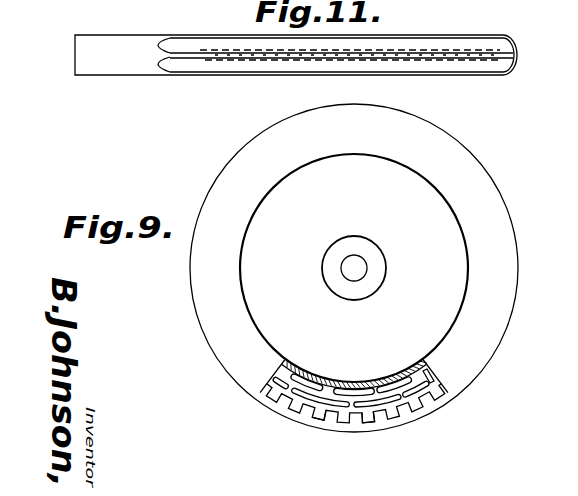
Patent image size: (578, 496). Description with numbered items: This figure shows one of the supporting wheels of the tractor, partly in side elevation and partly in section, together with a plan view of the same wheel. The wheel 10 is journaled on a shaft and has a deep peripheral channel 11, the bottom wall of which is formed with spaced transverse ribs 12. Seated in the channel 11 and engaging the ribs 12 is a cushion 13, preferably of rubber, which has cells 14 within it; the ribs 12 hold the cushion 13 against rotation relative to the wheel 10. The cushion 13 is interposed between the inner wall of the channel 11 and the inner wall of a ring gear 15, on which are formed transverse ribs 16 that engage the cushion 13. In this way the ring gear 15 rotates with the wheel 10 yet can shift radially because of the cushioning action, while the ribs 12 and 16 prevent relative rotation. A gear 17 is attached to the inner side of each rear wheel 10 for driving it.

The wheel 10 is at (422, 202).
The peripheral channel 11 is at (445, 377).
The transverse ribs 12 is at (336, 380).
The cushion 13 is at (296, 380).
The cells 14 is at (296, 380).
The ring gear 15 is at (398, 407).
The transverse ribs 16 is at (353, 408).
The gear 17 is at (378, 410).